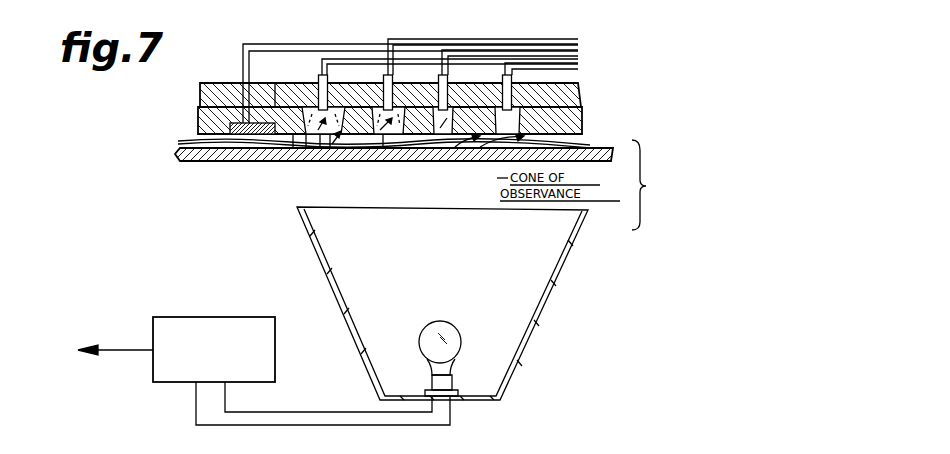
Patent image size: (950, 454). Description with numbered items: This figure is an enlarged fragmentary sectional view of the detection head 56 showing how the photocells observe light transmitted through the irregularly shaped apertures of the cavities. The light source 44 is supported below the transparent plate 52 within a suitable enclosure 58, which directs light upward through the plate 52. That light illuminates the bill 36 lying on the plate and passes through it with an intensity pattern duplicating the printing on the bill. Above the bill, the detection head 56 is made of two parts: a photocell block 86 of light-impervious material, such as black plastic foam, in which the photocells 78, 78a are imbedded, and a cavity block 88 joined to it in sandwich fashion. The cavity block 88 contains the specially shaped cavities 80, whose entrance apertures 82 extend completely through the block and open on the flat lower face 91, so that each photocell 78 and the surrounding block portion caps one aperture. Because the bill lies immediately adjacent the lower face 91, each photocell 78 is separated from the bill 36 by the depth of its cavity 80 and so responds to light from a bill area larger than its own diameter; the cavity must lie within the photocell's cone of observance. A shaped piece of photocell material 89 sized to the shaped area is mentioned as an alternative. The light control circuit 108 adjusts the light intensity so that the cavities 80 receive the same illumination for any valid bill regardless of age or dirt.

The bill 36 is at (588, 148).
The light source 44 is at (456, 333).
The plate 52 is at (138, 124).
The detection head 56 is at (586, 64).
The enclosure 58 is at (549, 292).
The photocell 78 is at (513, 78).
The photocell 78a is at (463, 86).
The shaped cavity 80 is at (334, 144).
The entrance aperture 82 is at (307, 147).
The photocell block 86 is at (581, 95).
The cavity block 88 is at (583, 125).
The photocell material 89 is at (248, 134).
The lower face 91 is at (278, 84).
The light control circuit 108 is at (236, 300).